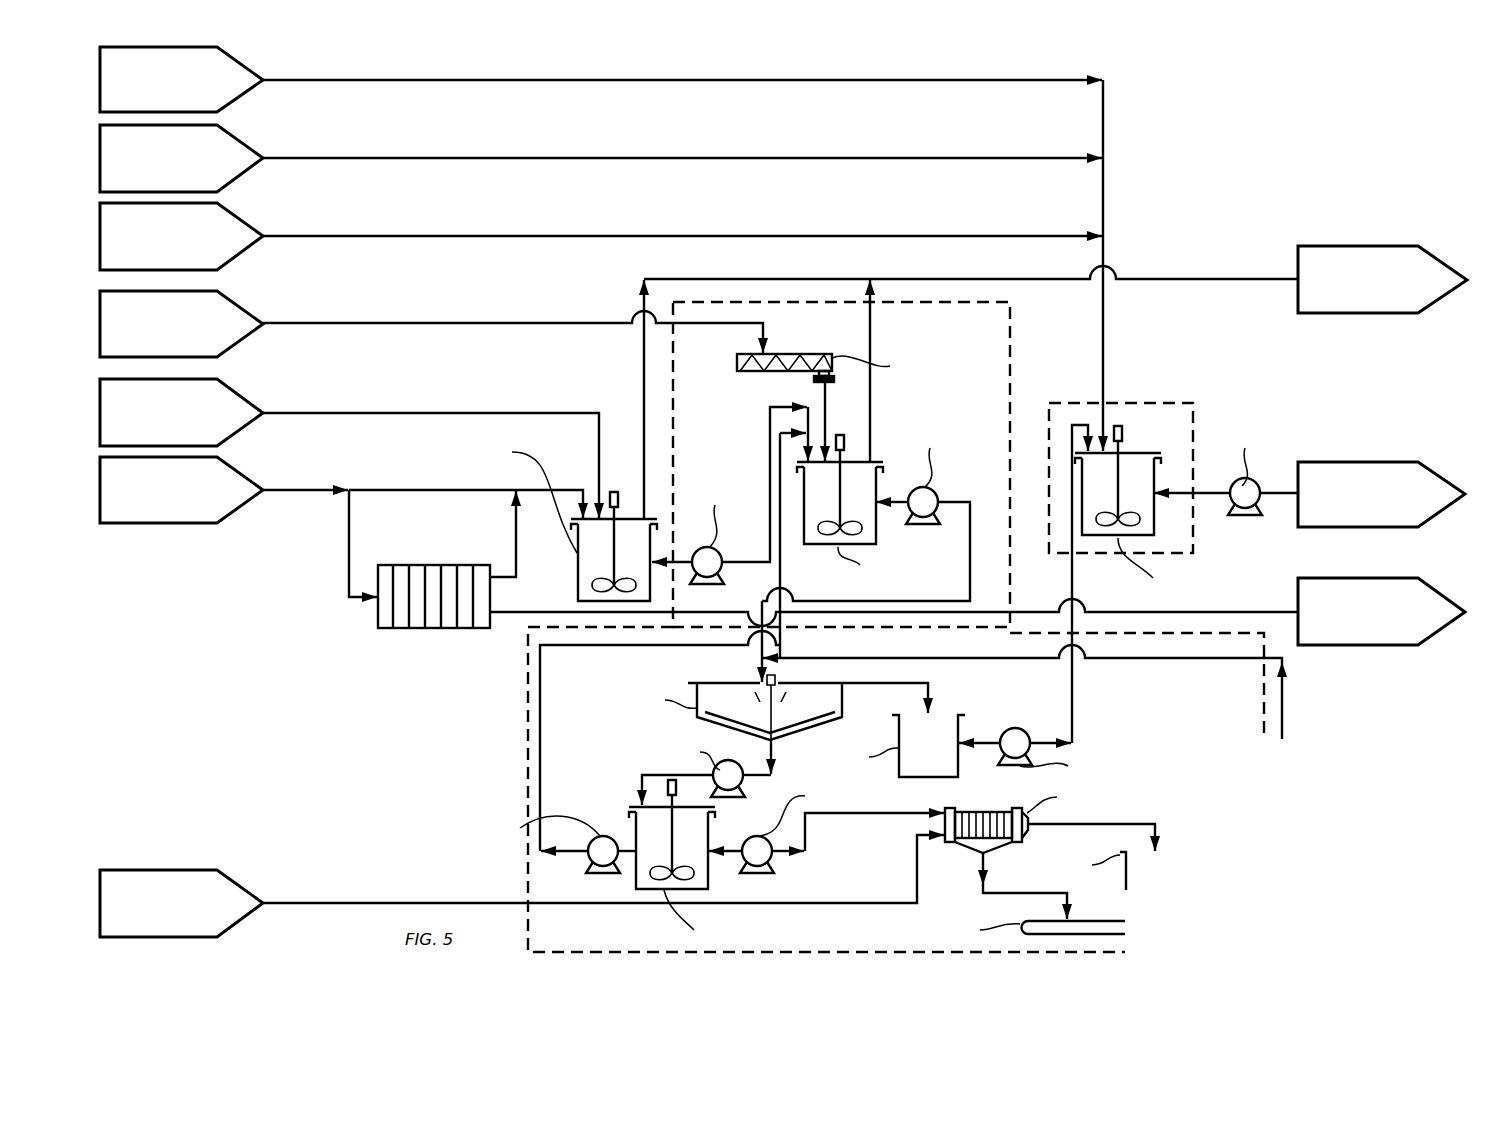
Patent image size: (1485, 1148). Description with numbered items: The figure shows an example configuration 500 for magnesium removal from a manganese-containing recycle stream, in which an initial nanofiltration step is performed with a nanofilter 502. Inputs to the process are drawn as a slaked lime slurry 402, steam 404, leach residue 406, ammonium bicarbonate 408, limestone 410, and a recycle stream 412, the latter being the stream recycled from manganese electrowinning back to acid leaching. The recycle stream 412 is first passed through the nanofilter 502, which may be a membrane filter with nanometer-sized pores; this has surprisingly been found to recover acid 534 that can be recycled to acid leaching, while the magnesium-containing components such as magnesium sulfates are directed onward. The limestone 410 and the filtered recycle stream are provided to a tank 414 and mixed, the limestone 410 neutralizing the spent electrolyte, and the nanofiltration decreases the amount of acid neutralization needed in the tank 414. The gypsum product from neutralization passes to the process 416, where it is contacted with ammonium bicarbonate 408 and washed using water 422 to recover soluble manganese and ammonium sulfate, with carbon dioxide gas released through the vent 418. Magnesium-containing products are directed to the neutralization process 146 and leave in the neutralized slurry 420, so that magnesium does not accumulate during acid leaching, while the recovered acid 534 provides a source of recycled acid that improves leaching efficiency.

The configuration for magnesium removal 500 is at (1258, 90).
The slaked lime slurry 402 is at (235, 100).
The steam 404 is at (235, 180).
The leach residue 406 is at (235, 258).
The ammonium bicarbonate 408 is at (235, 345).
The limestone 410 is at (235, 434).
The recycle stream 412 is at (235, 511).
The tank 414 is at (577, 585).
The process 416 is at (1010, 340).
The vent 418 is at (1378, 315).
The neutralized slurry 420 is at (1378, 529).
The water 422 is at (183, 874).
The neutralization process 146 is at (1130, 403).
The nanofilter 502 is at (430, 628).
The recycled acid 534 is at (1322, 647).